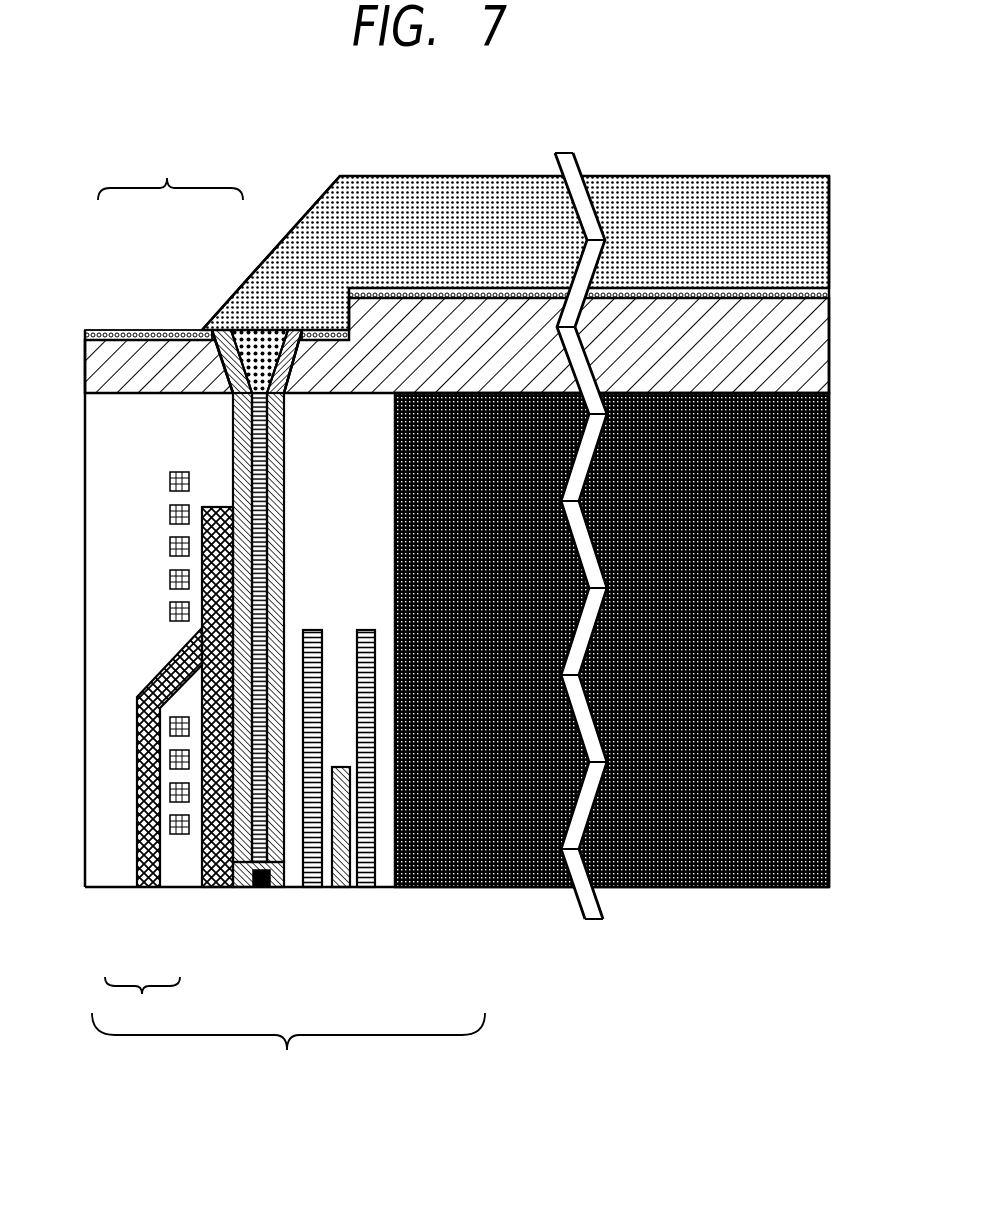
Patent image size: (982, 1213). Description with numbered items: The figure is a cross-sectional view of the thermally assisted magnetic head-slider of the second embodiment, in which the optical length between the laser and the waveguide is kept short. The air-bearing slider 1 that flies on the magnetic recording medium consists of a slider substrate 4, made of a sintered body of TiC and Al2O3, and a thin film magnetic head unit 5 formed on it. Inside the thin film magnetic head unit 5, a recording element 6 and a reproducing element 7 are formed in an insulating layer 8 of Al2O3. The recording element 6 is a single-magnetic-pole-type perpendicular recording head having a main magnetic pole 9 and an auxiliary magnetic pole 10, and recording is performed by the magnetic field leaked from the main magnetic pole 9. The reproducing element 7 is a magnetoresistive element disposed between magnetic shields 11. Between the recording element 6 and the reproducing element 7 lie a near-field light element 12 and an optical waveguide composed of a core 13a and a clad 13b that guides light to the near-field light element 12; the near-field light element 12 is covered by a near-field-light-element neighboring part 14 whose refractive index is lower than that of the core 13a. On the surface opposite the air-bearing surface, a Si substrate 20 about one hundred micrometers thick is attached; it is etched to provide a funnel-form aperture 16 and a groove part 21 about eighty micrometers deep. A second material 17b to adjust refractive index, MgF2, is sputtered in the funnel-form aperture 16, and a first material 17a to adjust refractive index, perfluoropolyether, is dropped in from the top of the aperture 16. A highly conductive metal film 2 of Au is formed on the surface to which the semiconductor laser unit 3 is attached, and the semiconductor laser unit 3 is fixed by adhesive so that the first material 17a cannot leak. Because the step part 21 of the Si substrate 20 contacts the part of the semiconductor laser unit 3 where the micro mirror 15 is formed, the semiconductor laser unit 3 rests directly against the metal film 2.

The air-bearing slider 1 is at (809, 887).
The metal film 2 is at (108, 330).
The semiconductor laser unit 3 is at (430, 213).
The slider substrate 4 is at (716, 812).
The thin film magnetic head unit 5 is at (288, 1049).
The recording element 6 is at (142, 1003).
The reproducing element 7 is at (343, 887).
The insulating layer 8 is at (103, 652).
The main magnetic pole 9 is at (223, 887).
The auxiliary magnetic pole 10 is at (148, 887).
The magnetic shields 11 is at (313, 842).
The near-field light element 12 is at (260, 887).
The core 13a is at (258, 445).
The clad 13b is at (272, 424).
The near-field-light-element neighboring part 14 is at (280, 887).
The micro mirror 15 is at (319, 199).
The funnel-form aperture 16 is at (282, 332).
The first material to adjust refractive index 17a is at (262, 363).
The second material to adjust refractive index 17b is at (230, 348).
The Si substrate 20 is at (655, 363).
The groove part 21 is at (170, 170).